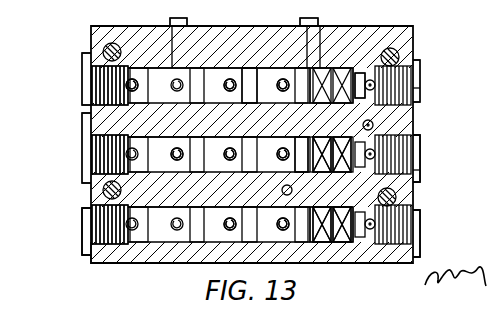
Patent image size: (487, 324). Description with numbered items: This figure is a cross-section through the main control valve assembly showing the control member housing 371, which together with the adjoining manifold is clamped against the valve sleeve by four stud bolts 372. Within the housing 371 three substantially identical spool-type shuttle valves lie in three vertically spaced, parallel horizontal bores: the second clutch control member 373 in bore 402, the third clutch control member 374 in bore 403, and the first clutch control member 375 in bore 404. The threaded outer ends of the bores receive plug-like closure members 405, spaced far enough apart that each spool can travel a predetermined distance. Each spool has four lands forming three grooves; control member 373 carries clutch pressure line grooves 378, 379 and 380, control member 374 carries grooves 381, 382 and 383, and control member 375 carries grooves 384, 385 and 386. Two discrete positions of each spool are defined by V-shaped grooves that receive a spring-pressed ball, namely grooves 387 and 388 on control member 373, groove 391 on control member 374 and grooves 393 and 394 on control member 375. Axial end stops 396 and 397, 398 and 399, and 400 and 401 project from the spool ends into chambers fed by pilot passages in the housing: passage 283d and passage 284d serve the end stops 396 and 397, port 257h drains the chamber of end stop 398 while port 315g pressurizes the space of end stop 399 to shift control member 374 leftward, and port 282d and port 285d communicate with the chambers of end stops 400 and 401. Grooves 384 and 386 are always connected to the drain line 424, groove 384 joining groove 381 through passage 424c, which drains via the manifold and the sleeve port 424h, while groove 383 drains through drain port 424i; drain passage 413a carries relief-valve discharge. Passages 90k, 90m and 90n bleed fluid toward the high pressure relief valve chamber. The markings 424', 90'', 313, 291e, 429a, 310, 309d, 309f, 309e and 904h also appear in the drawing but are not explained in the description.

The stud bolts 372 is at (100, 40).
The end stop member 398 is at (124, 189).
The end stop member 397 is at (372, 262).
The bracket 424' is at (173, 14).
The control member housing 371 is at (217, 33).
The bracket 90'' is at (310, 14).
The closure member 405 is at (422, 78).
The end stop member 401 is at (418, 94).
The port 282d is at (82, 88).
The port 257h is at (82, 160).
The passage 283d is at (82, 230).
The end stop member 396 is at (126, 262).
The bore 402 is at (182, 262).
The V-shaped groove 388 is at (352, 262).
The passage 284d is at (421, 224).
The port 315g is at (421, 146).
The end stop member 399 is at (421, 170).
The drain passage 413a is at (373, 126).
The V-shaped groove 394 is at (331, 93).
The passage 90n is at (331, 147).
The link 313 is at (345, 153).
The V-shaped groove 391 is at (331, 209).
The passage 90m is at (332, 214).
The passage 90k is at (336, 220).
The V-shaped groove 393 is at (336, 47).
The port 285d is at (350, 75).
The passage 424c is at (139, 70).
The first clutch control member 375 is at (193, 70).
The port 424h is at (292, 56).
The roller 291e is at (240, 74).
The bore 404 is at (265, 80).
The end stop member 400 is at (110, 95).
The clutch pressure line groove 384 is at (147, 93).
The spring 429a is at (128, 146).
The clutch pressure line groove 385 is at (202, 93).
The drain line 424 is at (187, 139).
The third clutch control member 374 is at (219, 128).
The roller 310 is at (238, 144).
The clutch pressure line groove 386 is at (288, 93).
The drain port 424i is at (280, 139).
The bore 403 is at (286, 151).
The clutch pressure line groove 381 is at (154, 163).
The spring 309d is at (138, 218).
The second clutch control member 373 is at (223, 208).
The clutch pressure line groove 382 is at (214, 163).
The clutch pressure line groove 383 is at (253, 163).
The pivot 309f is at (271, 192).
The roller 309e is at (270, 213).
The clutch pressure line groove 378 is at (145, 233).
The clutch pressure line groove 379 is at (201, 235).
The clutch pressure line groove 380 is at (250, 235).
The V-shaped groove 387 is at (297, 235).
The roller 904h is at (222, 226).